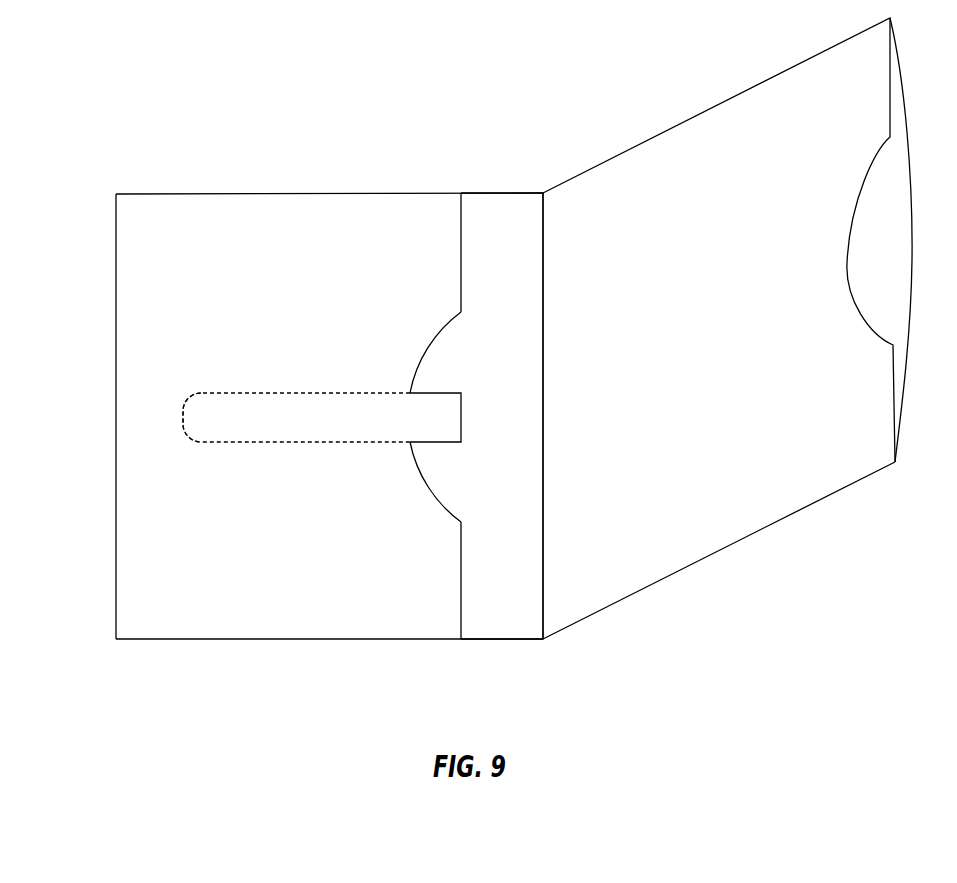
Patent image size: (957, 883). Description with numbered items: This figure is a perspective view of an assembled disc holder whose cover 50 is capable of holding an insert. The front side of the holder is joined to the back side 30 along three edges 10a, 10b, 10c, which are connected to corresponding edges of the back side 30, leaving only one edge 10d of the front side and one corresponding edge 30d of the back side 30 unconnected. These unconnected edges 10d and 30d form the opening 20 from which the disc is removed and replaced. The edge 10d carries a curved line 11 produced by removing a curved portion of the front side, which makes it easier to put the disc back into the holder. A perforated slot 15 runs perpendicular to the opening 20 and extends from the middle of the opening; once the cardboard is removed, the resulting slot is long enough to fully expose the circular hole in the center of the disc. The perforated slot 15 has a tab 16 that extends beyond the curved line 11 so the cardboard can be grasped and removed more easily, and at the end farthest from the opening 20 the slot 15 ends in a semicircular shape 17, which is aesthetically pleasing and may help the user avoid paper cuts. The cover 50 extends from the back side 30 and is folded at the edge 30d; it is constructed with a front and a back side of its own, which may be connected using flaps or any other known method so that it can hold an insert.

The edge of the front side 10a is at (287, 194).
The edge of the front side 10b is at (116, 420).
The edge of the front side 10c is at (292, 640).
The unconnected edge of the front side 10d is at (461, 293).
The curved line 11 is at (425, 347).
The perforated slot 15 is at (293, 393).
The tab 16 is at (437, 437).
The semicircular shape 17 is at (192, 400).
The back side 30 is at (477, 215).
The unconnected edge of the back side 30d is at (543, 413).
The opening 20 is at (513, 593).
The cover 50 is at (695, 537).